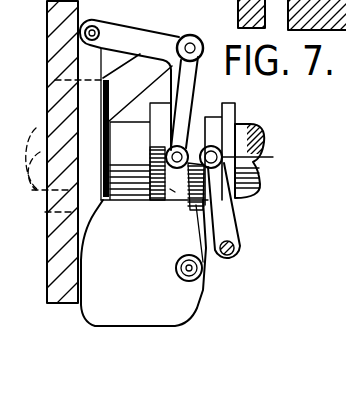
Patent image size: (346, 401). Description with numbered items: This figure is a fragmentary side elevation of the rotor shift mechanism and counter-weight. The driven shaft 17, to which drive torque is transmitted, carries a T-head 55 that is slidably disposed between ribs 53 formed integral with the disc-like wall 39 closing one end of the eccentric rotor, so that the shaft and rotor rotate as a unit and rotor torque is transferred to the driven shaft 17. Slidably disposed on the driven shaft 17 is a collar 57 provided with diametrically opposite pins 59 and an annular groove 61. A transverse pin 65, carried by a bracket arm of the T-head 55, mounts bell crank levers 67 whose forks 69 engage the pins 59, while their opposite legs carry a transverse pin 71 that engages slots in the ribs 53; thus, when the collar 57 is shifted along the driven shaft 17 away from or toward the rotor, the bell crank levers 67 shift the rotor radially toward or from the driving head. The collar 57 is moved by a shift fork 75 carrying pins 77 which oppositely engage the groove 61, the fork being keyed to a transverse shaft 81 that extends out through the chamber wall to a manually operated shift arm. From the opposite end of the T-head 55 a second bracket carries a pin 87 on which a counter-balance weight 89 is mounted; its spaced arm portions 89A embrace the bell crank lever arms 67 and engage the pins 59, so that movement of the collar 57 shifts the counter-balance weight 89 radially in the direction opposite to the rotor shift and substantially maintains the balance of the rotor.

The driven shaft 17 is at (253, 169).
The disc-like wall 39 is at (52, 108).
The ribs 53 is at (90, 64).
The T-head 55 is at (110, 92).
The collar 57 is at (155, 134).
The pins 59 is at (160, 158).
The annular groove 61 is at (214, 112).
The pin 65 is at (195, 36).
The bell crank levers 67 is at (150, 33).
The forks 69 is at (152, 145).
The transverse pin 71 is at (80, 33).
The shift fork 75 is at (232, 224).
The pins 77 is at (265, 157).
The transverse shaft 81 is at (238, 249).
The pin 87 is at (205, 282).
The counter-balance weight 89 is at (187, 301).
The arm portions 89A is at (170, 189).